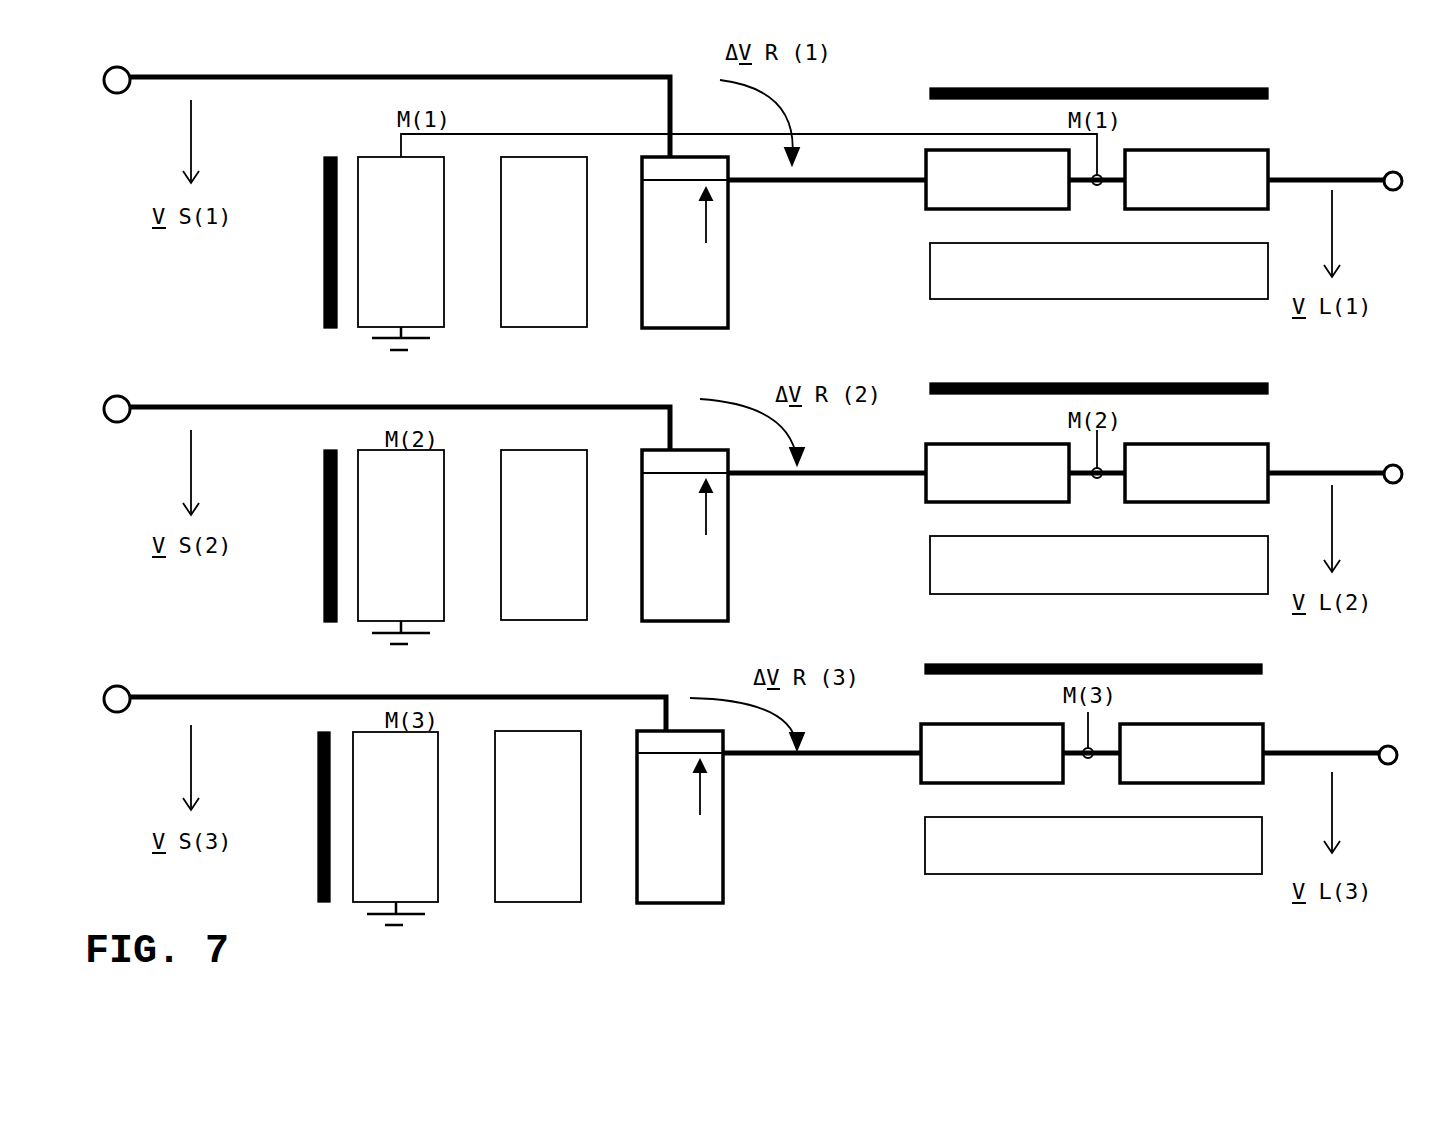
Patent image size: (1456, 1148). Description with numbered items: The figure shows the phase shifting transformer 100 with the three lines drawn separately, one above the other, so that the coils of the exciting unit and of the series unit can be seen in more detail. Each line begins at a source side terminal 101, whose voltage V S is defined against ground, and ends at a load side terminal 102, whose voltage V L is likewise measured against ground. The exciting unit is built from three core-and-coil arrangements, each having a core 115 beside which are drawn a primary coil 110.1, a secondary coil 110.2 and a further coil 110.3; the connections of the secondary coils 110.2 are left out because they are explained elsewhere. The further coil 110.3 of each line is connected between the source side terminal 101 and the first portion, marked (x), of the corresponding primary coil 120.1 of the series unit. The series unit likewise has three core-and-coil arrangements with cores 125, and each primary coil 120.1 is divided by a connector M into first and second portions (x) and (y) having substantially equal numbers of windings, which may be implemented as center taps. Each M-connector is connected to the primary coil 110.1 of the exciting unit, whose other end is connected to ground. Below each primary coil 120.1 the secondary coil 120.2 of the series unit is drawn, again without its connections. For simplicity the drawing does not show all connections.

The phase shifting transformer 100 is at (300, 954).
The source side terminal 101 is at (114, 409).
The load side terminal 102 is at (1402, 484).
The primary coil of exciting unit 110.1 is at (398, 541).
The secondary coil of exciting unit 110.2 is at (541, 529).
The further coil of exciting unit 110.3 is at (682, 530).
The core of exciting unit 115 is at (318, 512).
The primary coil of series unit 120.1 is at (1094, 466).
The secondary coil of series unit 120.2 is at (1096, 558).
The core of series unit 125 is at (1145, 387).